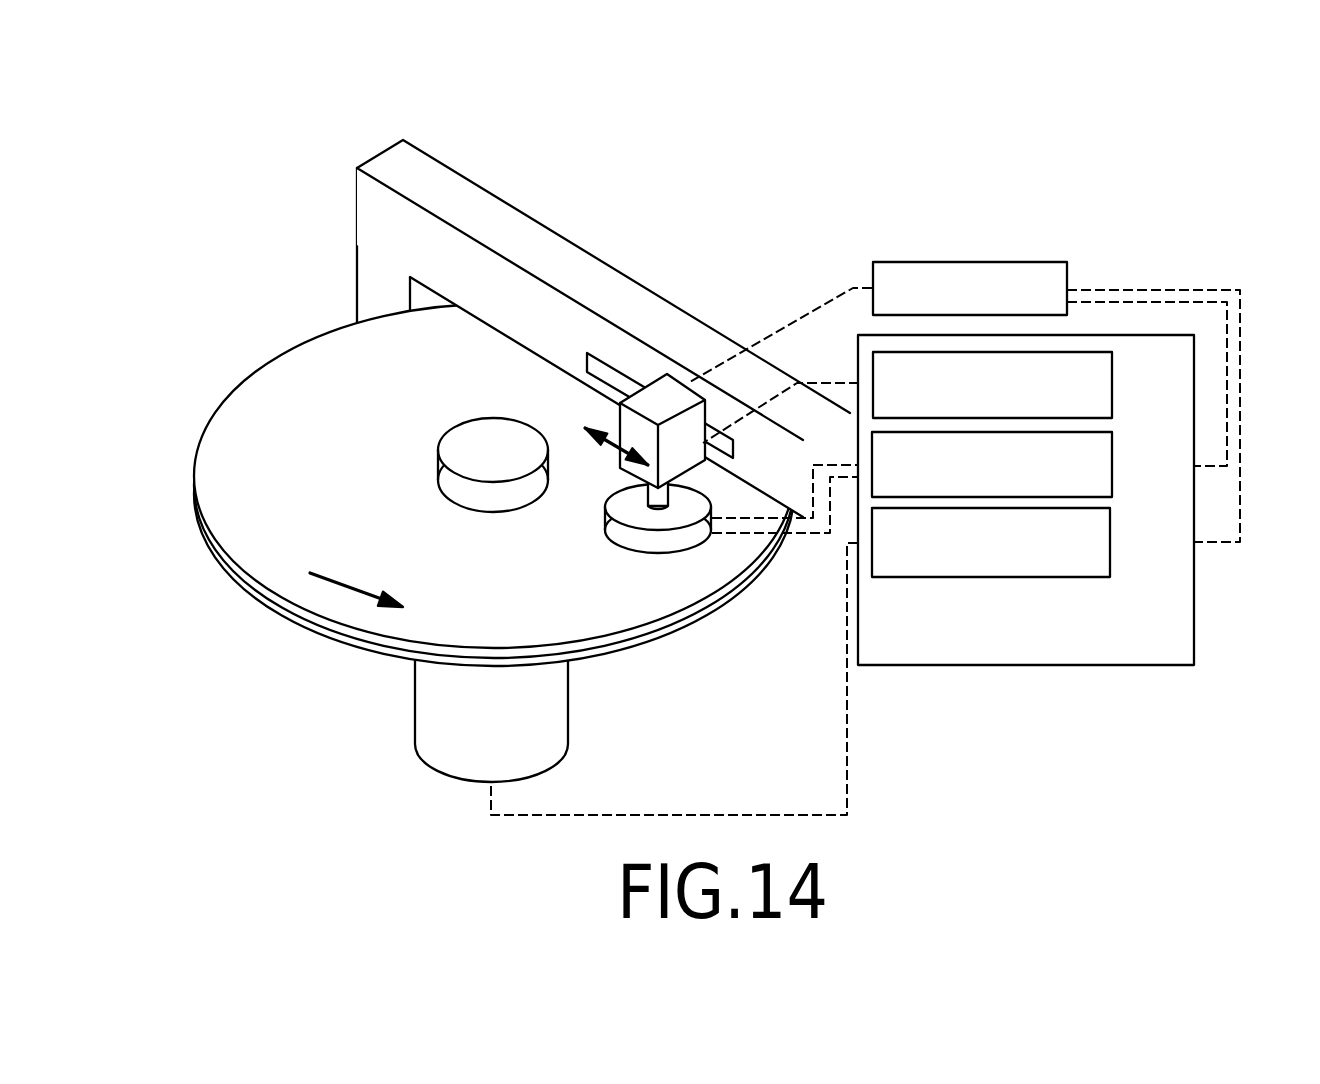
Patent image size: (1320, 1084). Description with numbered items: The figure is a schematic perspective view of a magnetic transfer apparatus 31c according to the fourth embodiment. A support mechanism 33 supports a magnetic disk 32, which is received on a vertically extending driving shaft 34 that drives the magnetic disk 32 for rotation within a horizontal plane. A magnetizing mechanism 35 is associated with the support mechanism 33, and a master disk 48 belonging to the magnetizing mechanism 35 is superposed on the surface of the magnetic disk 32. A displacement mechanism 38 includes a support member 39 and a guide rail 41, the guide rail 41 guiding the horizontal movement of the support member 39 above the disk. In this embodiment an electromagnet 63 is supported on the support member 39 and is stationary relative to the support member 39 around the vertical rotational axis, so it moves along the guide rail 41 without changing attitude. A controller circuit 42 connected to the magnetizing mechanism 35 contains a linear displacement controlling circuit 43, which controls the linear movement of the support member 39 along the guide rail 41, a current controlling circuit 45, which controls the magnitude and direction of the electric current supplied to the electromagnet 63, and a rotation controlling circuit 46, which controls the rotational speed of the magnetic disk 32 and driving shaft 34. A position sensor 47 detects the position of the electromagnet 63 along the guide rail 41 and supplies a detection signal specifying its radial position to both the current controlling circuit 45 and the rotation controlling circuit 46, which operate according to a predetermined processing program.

The magnetic transfer apparatus 31c is at (303, 171).
The magnetic disk 32 is at (304, 627).
The support mechanism 33 is at (306, 704).
The driving shaft 34 is at (416, 703).
The magnetizing mechanism 35 is at (452, 535).
The displacement mechanism 38 is at (732, 294).
The support member 39 is at (618, 415).
The guide rail 41 is at (491, 332).
The controller circuit 42 is at (1194, 608).
The linear displacement controlling circuit 43 is at (1112, 372).
The current controlling circuit 45 is at (1112, 487).
The rotation controlling circuit 46 is at (1110, 565).
The position sensor 47 is at (1067, 272).
The master disk 48 is at (303, 351).
The electromagnet 63 is at (632, 539).